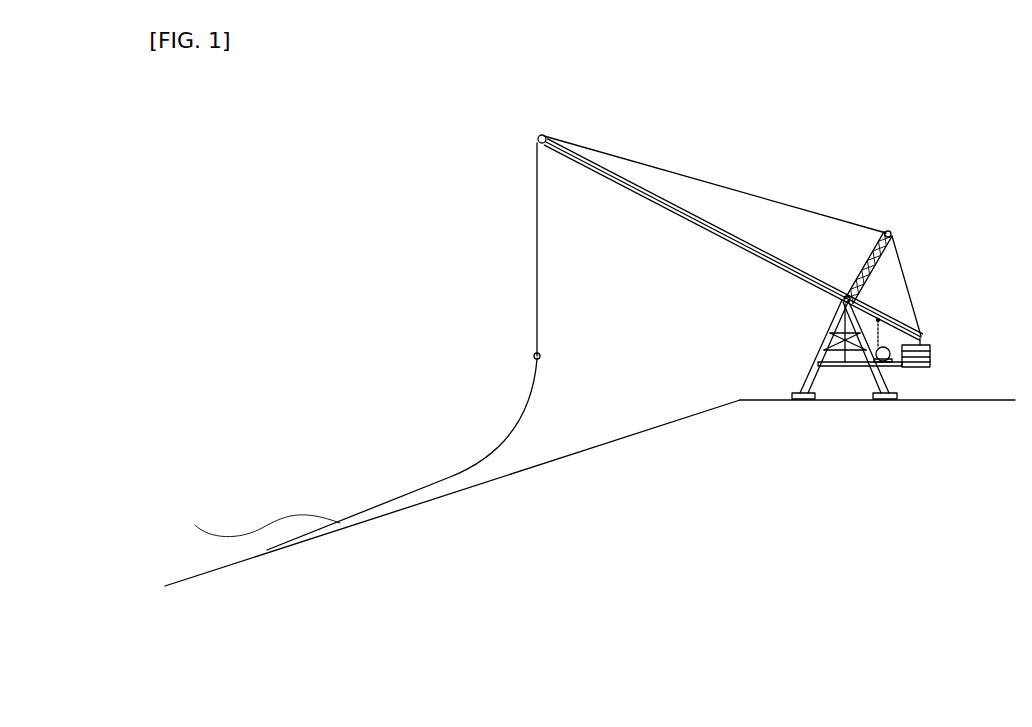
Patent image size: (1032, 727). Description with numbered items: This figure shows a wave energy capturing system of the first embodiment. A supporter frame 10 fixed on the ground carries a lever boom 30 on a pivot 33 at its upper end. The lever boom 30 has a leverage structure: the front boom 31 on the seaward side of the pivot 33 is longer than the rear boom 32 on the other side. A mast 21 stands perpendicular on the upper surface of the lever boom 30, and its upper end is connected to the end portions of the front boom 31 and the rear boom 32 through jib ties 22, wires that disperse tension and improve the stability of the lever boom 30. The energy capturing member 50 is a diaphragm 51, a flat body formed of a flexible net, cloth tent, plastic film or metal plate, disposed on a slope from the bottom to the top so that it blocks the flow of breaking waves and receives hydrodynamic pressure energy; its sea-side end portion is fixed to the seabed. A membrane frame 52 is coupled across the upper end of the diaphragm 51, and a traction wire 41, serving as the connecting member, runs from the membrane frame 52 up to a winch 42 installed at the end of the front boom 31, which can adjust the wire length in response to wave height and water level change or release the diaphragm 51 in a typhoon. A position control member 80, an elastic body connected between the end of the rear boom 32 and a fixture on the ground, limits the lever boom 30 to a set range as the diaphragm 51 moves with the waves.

The supporter frame 10 is at (806, 383).
The mast 21 is at (879, 262).
The jib tie 22 is at (732, 190).
The lever boom 30 is at (728, 249).
The front boom 31 is at (779, 258).
The rear boom 32 is at (898, 322).
The pivot 33 is at (845, 296).
The traction wire 41 is at (537, 255).
The winch 42 is at (542, 134).
The energy capturing member 50 is at (484, 417).
The diaphragm 51 is at (448, 478).
The membrane frame 52 is at (534, 356).
The position control member 80 is at (930, 355).